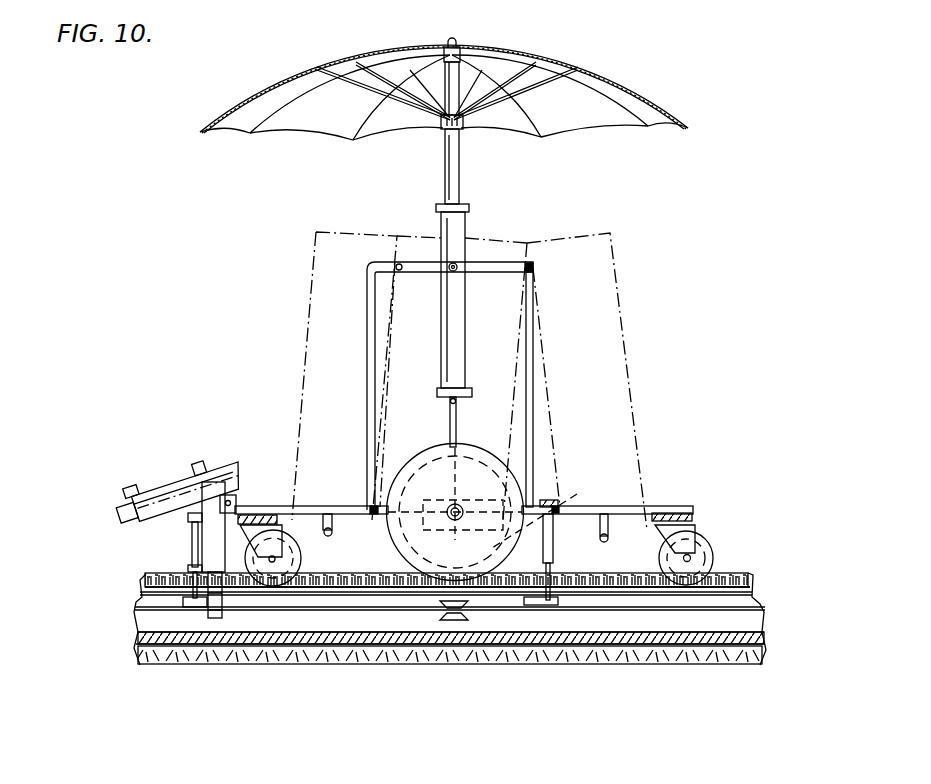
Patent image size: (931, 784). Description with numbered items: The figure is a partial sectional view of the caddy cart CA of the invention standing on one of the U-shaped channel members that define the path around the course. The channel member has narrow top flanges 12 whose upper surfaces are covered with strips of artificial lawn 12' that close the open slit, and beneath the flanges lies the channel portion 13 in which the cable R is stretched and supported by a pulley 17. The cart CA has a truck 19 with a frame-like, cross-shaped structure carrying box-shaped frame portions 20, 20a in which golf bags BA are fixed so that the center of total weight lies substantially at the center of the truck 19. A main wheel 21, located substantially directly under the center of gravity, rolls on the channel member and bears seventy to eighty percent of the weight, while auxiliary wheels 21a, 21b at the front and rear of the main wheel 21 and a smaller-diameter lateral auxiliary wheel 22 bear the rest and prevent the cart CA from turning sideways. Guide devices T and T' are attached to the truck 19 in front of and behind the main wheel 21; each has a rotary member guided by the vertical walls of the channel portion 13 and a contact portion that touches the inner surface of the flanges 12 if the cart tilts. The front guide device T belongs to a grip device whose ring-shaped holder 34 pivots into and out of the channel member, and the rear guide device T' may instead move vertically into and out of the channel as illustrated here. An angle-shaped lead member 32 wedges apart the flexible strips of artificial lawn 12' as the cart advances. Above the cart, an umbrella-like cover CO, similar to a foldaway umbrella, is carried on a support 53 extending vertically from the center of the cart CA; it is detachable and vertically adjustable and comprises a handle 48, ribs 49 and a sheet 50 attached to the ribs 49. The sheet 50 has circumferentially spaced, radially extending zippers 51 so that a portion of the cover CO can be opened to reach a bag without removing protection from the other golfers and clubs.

The flanges 12 is at (467, 594).
The artificial lawn 12' is at (472, 566).
The channel portion 13 is at (630, 620).
The pulley 17 is at (462, 622).
The truck 19 is at (636, 462).
The box-shaped frame portion 20 is at (338, 528).
The box-shaped frame portion 20a is at (612, 540).
The main wheel 21 is at (402, 563).
The auxiliary wheel 21a is at (268, 586).
The auxiliary wheel 21b is at (702, 556).
The auxiliary wheel 22 is at (542, 510).
The angle-shaped lead member 32 is at (183, 572).
The ring-shaped holder 34 is at (238, 496).
The handle 48 is at (458, 178).
The ribs 49 is at (522, 108).
The sheet 50 is at (583, 112).
The zipper 51 is at (230, 108).
The support 53 is at (460, 328).
The umbrella-like cover CO is at (636, 66).
The golf bag BA is at (573, 237).
The caddy cart CA is at (681, 486).
The guide device T is at (158, 653).
The guide device T' is at (588, 646).
The cable R is at (683, 615).